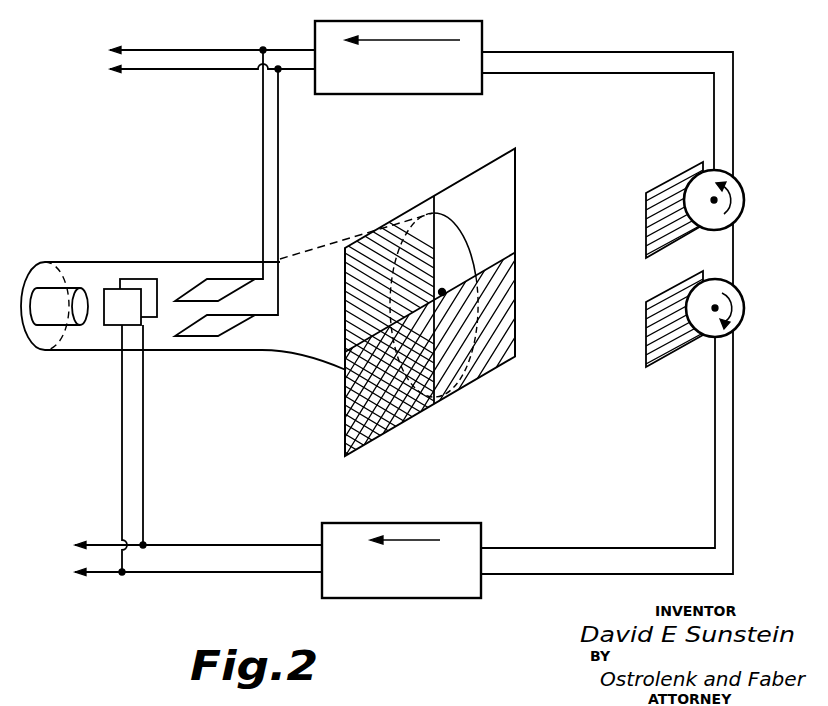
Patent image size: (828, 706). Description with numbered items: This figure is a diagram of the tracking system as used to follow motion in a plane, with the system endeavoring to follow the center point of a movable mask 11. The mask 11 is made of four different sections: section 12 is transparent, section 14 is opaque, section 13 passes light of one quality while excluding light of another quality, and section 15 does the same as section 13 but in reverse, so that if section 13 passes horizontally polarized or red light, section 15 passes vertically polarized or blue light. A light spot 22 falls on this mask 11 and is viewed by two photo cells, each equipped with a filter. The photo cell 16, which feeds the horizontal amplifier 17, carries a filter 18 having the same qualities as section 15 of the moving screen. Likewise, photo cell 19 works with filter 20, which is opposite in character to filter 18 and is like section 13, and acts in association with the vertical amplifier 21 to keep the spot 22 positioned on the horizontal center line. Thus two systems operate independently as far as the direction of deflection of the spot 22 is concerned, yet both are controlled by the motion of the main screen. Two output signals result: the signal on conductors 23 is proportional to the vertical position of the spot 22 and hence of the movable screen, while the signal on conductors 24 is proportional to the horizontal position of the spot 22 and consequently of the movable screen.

The mask 11 is at (517, 268).
The transparent section 12 is at (516, 190).
The first selective section 13 is at (382, 243).
The opaque section 14 is at (345, 410).
The second selective section 15 is at (507, 325).
The photo cell 16 is at (745, 307).
The horizontal amplifier 17 is at (470, 523).
The filter 18 is at (646, 318).
The photo cell 19 is at (745, 207).
The filter 20 is at (644, 212).
The vertical amplifier 21 is at (365, 96).
The spot 22 is at (443, 292).
The conductors 23 is at (110, 69).
The conductors 24 is at (75, 572).